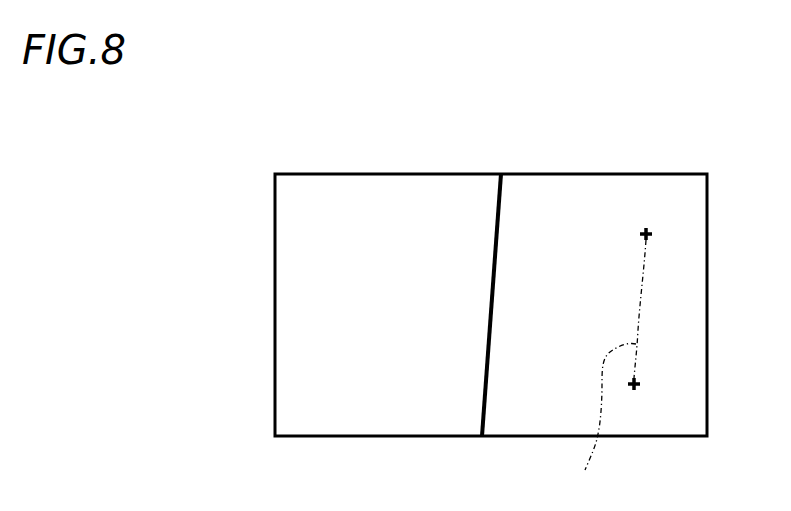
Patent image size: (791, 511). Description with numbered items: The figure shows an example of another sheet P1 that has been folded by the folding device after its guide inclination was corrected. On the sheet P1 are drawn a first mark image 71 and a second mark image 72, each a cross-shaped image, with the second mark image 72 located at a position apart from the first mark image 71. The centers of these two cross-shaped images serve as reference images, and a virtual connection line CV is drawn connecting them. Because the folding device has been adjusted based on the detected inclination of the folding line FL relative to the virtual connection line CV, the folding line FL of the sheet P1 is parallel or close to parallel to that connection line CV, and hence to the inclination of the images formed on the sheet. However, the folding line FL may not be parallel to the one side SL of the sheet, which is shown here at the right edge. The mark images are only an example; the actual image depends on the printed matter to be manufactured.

The another sheet P1 is at (605, 174).
The folding line FL is at (482, 390).
The second mark image 72 is at (648, 233).
The first mark image 71 is at (637, 390).
The virtual connection line CV is at (605, 367).
The one side of the sheet SL is at (708, 398).